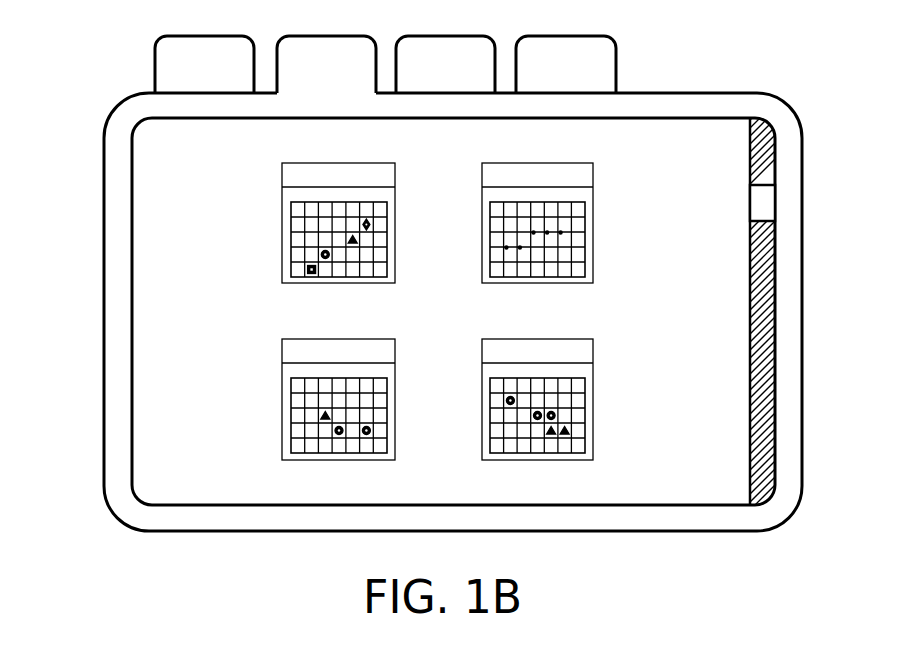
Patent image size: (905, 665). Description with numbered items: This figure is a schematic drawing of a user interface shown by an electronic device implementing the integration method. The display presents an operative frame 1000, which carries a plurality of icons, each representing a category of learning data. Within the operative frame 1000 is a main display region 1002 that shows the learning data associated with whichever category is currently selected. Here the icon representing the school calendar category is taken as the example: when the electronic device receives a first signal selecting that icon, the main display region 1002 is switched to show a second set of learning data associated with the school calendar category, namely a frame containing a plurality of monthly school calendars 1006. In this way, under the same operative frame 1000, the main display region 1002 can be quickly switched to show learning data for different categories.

The operative frame 1000 is at (763, 48).
The main display region 1002 is at (688, 117).
The monthly school calendars 1006 is at (89, 147).